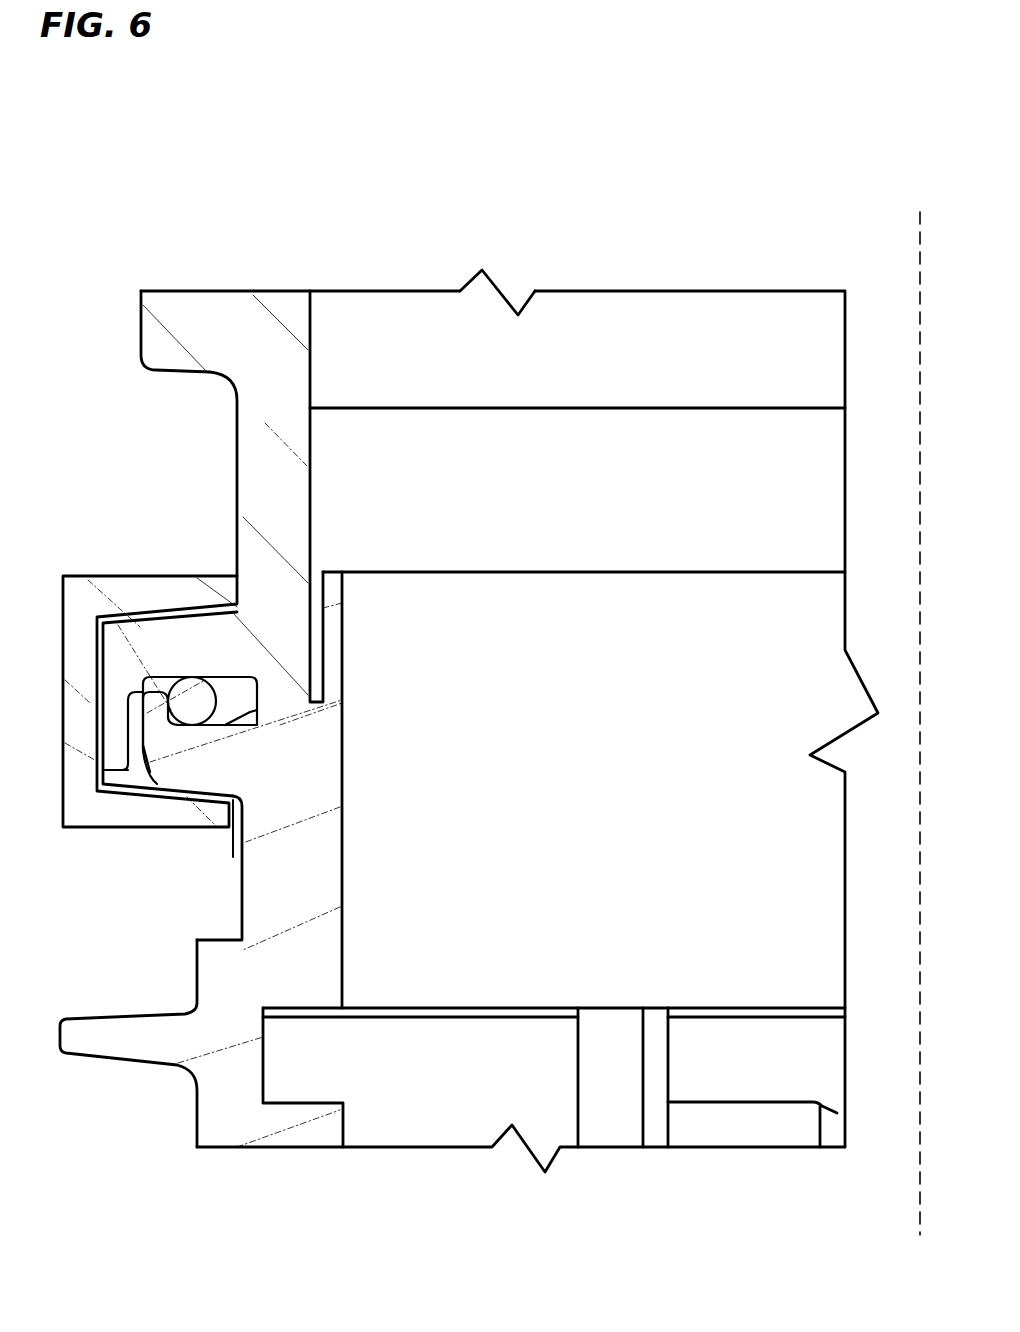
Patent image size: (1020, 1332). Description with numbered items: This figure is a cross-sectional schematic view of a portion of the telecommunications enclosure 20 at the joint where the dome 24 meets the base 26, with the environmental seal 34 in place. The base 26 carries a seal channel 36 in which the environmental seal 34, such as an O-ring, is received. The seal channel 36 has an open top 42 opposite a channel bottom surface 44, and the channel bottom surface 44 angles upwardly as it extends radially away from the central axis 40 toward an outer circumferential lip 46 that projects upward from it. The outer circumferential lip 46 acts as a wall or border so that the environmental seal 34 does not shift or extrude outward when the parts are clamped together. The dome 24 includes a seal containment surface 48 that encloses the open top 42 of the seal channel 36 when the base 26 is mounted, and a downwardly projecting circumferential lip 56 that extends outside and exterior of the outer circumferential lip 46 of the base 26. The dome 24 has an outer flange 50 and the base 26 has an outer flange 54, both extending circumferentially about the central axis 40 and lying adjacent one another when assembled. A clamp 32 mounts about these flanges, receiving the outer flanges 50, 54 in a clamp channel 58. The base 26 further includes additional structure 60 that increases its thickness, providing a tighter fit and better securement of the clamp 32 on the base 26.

The telecommunications enclosure 20 is at (633, 247).
The dome 24 is at (277, 302).
The base 26 is at (388, 1132).
The clamp 32 is at (131, 674).
The environmental seal 34 is at (182, 684).
The seal channel 36 is at (236, 697).
The central axis 40 is at (920, 1172).
The open top 42 is at (167, 694).
The channel bottom surface 44 is at (283, 712).
The outer circumferential lip 46 is at (160, 694).
The seal containment surface 48 is at (191, 690).
The outer flange 50 is at (98, 648).
The outer flange 54 is at (147, 750).
The downwardly projecting circumferential lip 56 is at (117, 772).
The clamp channel 58 is at (107, 653).
The structure 60 is at (233, 858).